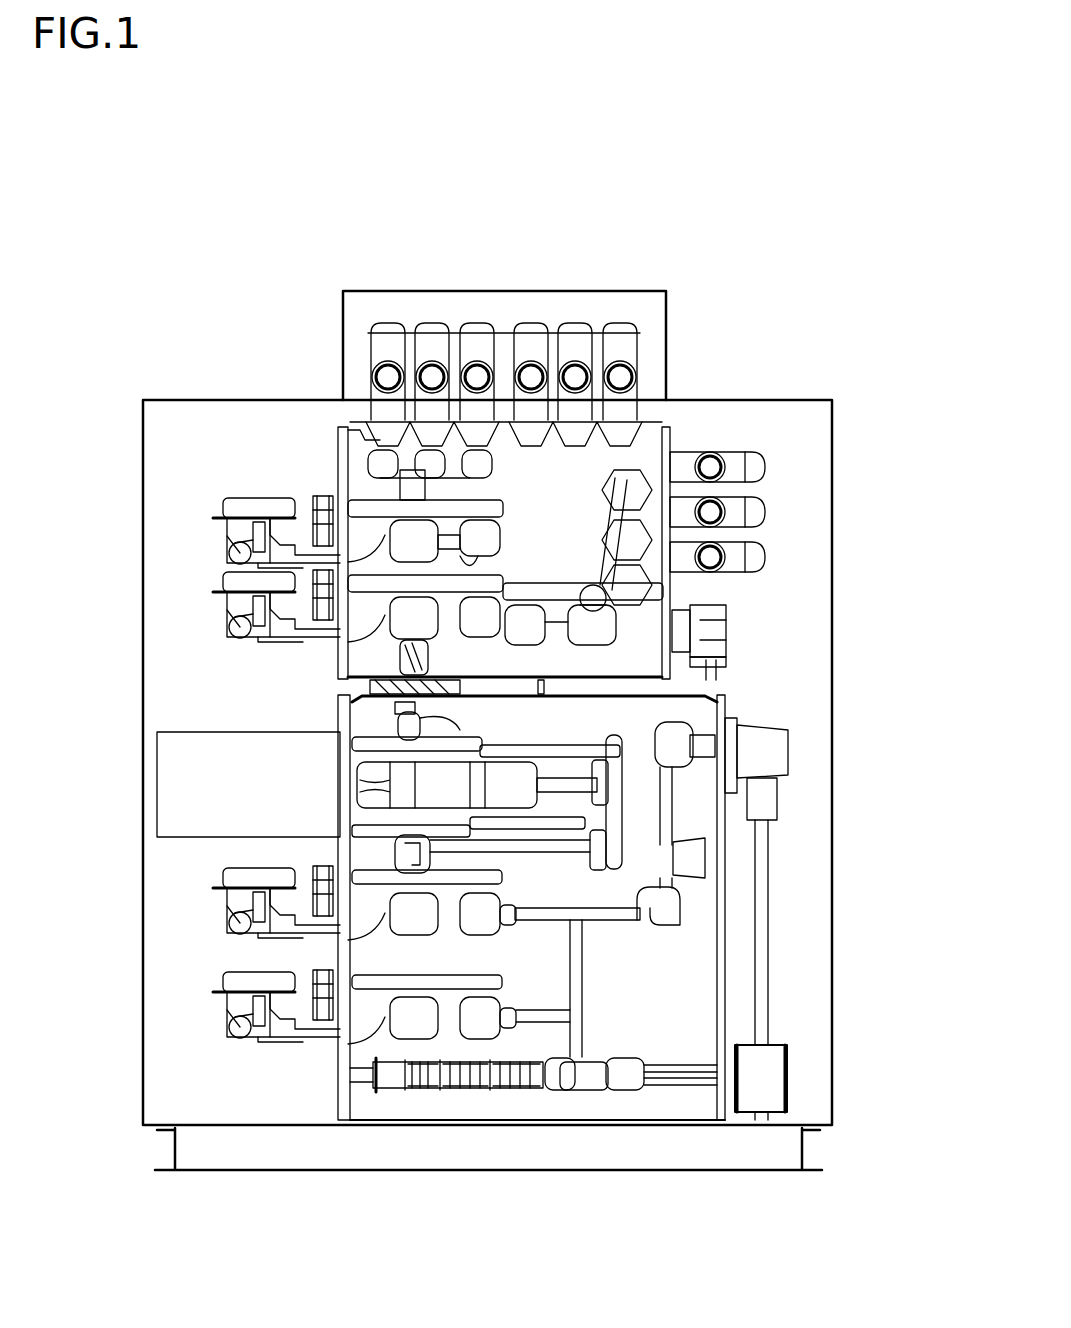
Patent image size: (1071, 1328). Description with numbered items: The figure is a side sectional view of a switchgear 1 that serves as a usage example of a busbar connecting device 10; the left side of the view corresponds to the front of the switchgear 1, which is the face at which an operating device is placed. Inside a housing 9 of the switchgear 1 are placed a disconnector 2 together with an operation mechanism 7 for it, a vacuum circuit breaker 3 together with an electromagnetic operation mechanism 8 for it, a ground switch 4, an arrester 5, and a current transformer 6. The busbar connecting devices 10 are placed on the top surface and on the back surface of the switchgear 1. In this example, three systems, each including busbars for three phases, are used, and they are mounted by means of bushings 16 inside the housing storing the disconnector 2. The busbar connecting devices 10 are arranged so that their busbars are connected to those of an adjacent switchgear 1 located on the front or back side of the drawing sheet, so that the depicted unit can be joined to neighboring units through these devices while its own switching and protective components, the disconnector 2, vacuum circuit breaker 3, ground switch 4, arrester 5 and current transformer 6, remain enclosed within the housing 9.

The switchgear 1 is at (249, 247).
The disconnector 2 is at (395, 520).
The vacuum circuit breaker 3 is at (622, 813).
The ground switch 4 is at (483, 1038).
The arrester 5 is at (425, 1085).
The current transformer 6 is at (787, 1078).
The operation mechanism 7 is at (218, 510).
The electromagnetic operation mechanism 8 is at (192, 735).
The housing 9 is at (832, 400).
The busbar connecting device 10 is at (638, 350).
The bushing 16 is at (645, 430).